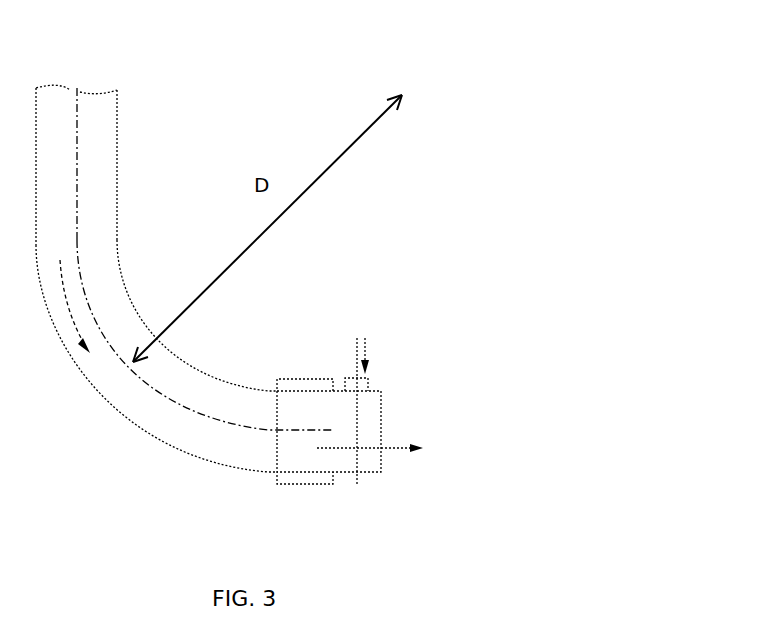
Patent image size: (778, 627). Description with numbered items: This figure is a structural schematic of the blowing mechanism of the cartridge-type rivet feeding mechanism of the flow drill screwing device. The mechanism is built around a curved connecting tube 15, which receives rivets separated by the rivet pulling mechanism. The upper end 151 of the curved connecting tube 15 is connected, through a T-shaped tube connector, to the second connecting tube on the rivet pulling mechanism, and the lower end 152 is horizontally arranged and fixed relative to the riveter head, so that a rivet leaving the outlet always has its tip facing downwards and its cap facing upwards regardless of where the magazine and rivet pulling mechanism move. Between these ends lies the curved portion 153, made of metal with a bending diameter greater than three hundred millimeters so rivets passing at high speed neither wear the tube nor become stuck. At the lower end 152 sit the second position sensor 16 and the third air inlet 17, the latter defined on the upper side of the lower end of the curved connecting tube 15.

The curved connecting tube 15 is at (110, 303).
The upper end 151 is at (85, 120).
The lower end 152 is at (370, 459).
The curved portion 153 is at (103, 380).
The second position sensor 16 is at (302, 388).
The third air inlet 17 is at (370, 378).